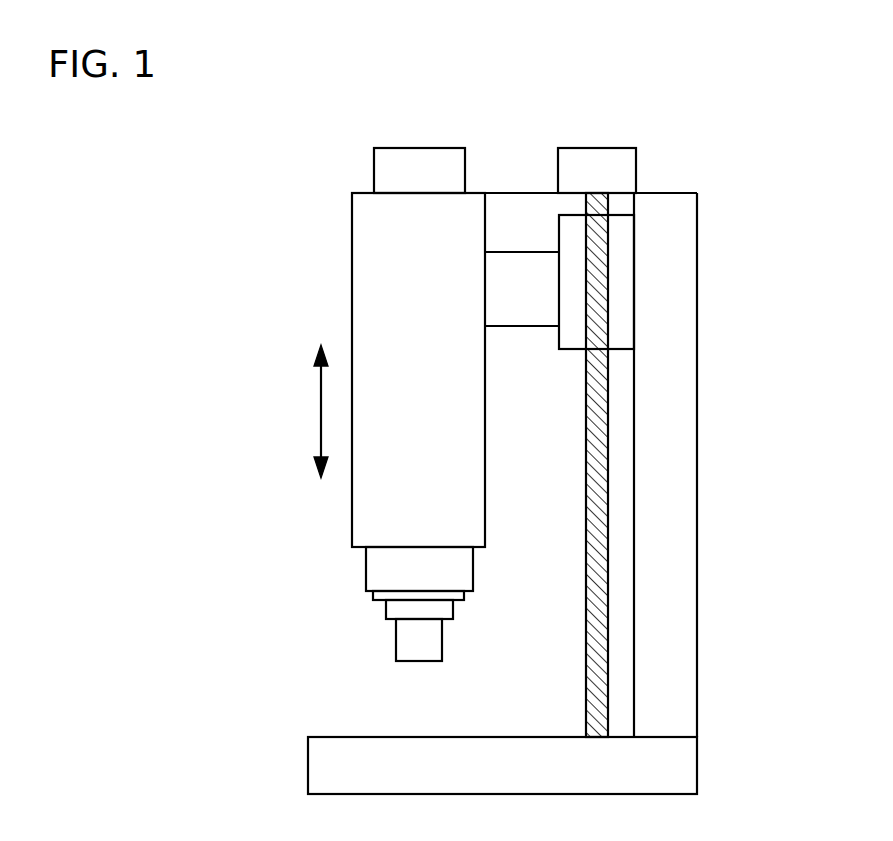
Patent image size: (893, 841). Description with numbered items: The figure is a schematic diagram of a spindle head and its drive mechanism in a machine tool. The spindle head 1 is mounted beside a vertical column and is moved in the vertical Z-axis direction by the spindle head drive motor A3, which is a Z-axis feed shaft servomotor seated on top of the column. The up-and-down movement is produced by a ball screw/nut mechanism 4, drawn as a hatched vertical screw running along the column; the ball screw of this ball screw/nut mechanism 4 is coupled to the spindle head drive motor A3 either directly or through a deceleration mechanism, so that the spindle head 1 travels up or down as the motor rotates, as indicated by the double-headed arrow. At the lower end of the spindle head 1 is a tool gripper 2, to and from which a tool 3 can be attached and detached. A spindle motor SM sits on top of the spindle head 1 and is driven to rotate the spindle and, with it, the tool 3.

The spindle head 1 is at (372, 305).
The tool gripper 2 is at (368, 596).
The tool 3 is at (395, 640).
The ball screw/nut mechanism 4 is at (640, 317).
The spindle motor SM is at (417, 148).
The spindle head drive motor A3 is at (595, 148).